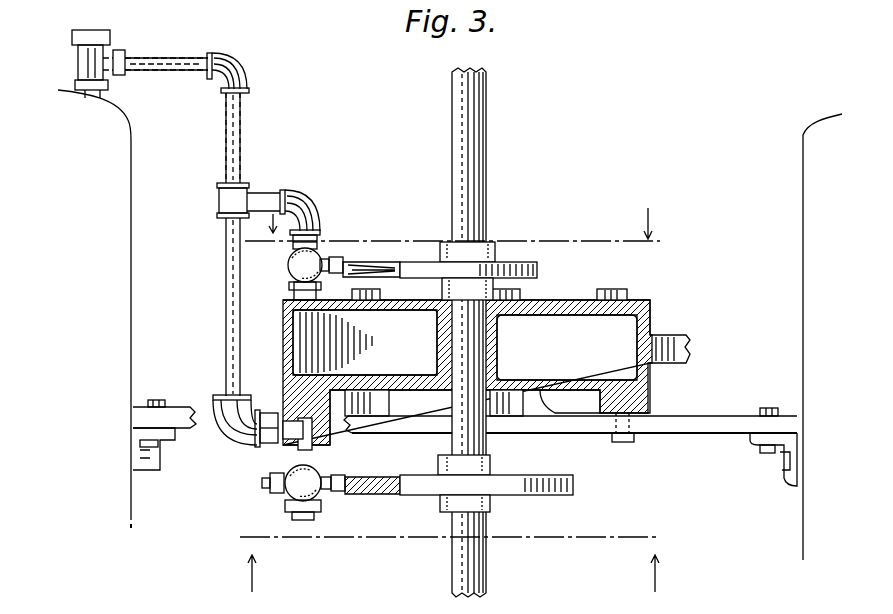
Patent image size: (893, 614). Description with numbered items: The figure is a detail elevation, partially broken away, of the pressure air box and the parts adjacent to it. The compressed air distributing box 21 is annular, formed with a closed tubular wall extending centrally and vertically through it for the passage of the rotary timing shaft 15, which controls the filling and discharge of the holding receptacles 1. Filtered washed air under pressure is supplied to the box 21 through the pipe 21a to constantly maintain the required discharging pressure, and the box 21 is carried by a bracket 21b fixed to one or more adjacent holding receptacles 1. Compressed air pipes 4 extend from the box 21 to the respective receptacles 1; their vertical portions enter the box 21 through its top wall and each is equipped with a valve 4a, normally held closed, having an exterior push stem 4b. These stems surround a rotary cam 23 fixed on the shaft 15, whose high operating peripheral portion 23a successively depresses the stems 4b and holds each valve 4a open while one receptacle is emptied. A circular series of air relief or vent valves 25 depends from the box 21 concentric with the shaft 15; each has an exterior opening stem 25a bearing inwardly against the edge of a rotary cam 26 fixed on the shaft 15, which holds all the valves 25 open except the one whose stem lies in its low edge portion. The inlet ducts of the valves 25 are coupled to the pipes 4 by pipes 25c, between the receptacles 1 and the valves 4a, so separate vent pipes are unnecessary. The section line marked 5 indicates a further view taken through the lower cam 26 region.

The holding receptacle 1 is at (124, 383).
The compressed air pipe 4 is at (461, 230).
The valve 4a is at (288, 270).
The push stem 4b is at (343, 266).
The section line 5- 5 is at (454, 562).
The rotary timing shaft 15 is at (477, 156).
The compressed air distributing box 21 is at (174, 458).
The pipe 21a is at (670, 356).
The bracket 21b is at (719, 419).
The rotary cam 23 is at (513, 270).
The high operating peripheral portion 23a is at (383, 279).
The air relief valve 25 is at (300, 484).
The opening stem 25a is at (346, 480).
The pipe 25c is at (224, 265).
The rotary cam 26 is at (556, 496).